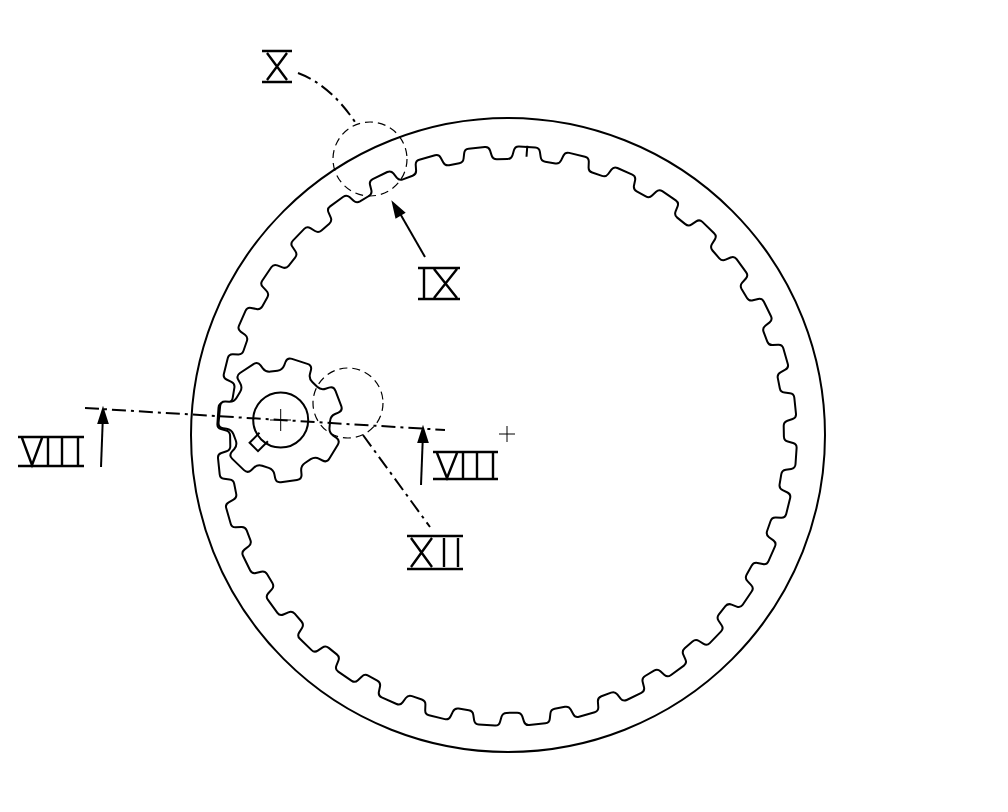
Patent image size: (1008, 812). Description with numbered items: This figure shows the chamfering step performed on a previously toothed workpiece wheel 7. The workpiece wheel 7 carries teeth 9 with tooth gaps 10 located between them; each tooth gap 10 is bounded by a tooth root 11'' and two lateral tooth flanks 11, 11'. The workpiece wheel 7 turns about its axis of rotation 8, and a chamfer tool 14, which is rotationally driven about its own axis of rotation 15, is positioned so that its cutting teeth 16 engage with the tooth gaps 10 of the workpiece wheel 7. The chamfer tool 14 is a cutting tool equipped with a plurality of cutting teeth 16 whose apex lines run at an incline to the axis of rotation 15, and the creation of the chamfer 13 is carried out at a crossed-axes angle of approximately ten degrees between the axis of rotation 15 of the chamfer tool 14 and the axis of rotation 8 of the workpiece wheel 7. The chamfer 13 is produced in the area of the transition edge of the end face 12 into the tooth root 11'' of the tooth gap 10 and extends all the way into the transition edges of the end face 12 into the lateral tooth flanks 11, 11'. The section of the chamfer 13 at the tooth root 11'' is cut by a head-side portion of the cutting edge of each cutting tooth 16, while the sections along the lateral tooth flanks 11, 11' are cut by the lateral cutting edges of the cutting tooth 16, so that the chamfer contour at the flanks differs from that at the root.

The workpiece wheel 7 is at (664, 174).
The axis of rotation 8 is at (515, 438).
The tooth 9 is at (793, 427).
The tooth gap 10 is at (763, 552).
The tooth flank 11 is at (506, 200).
The tooth flank 11' is at (560, 203).
The tooth root 11'' is at (542, 233).
The end face 12 is at (792, 530).
The chamfer 13 is at (752, 595).
The chamfer tool 14 is at (252, 365).
The axis of rotation 15 is at (280, 420).
The cutting tooth 16 is at (288, 472).